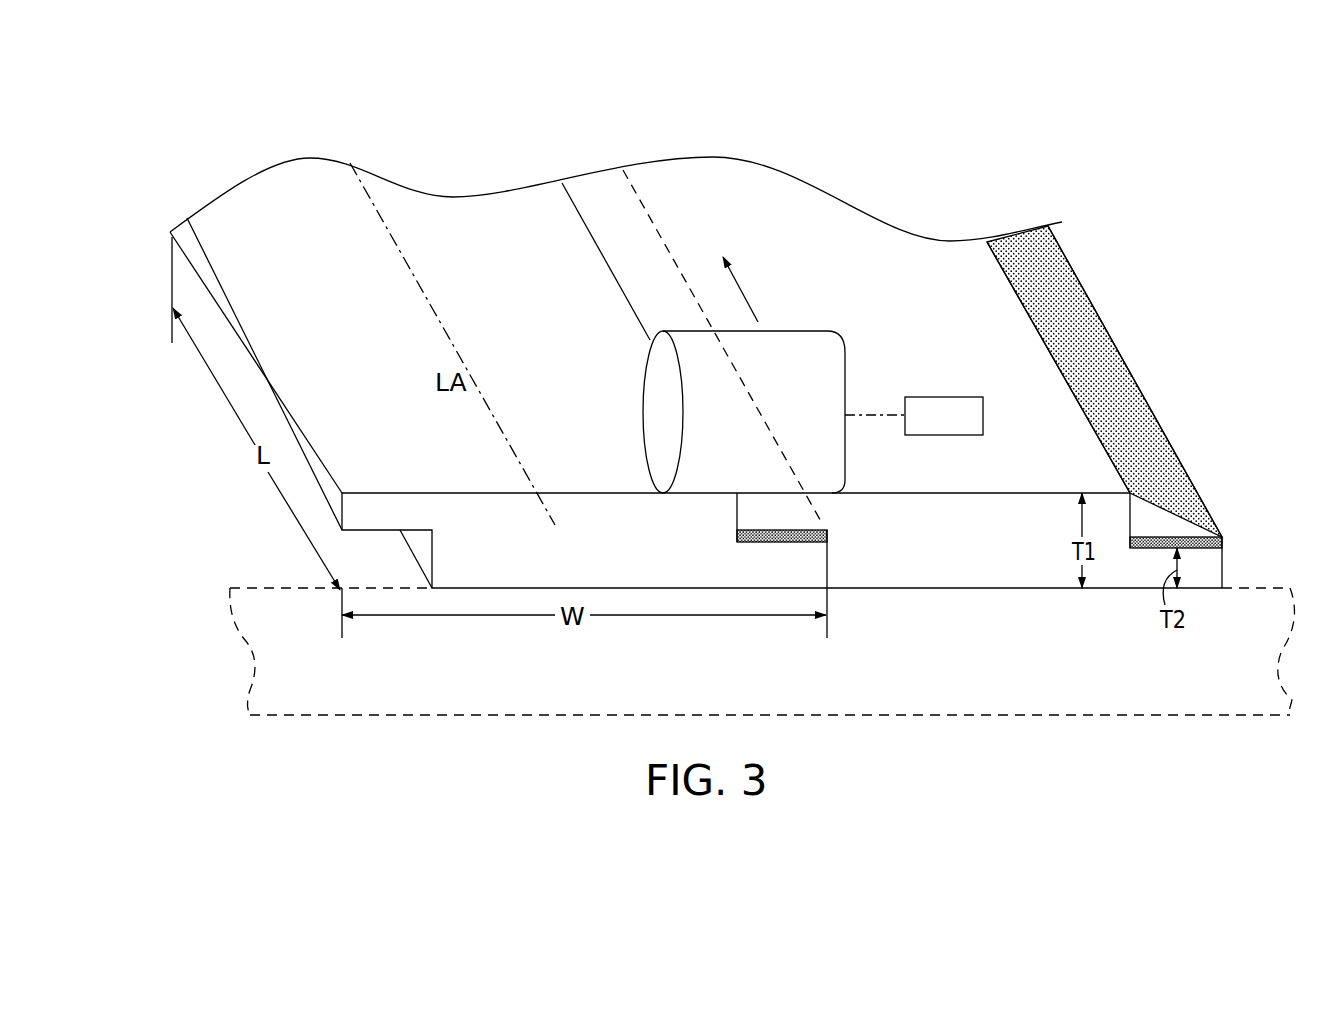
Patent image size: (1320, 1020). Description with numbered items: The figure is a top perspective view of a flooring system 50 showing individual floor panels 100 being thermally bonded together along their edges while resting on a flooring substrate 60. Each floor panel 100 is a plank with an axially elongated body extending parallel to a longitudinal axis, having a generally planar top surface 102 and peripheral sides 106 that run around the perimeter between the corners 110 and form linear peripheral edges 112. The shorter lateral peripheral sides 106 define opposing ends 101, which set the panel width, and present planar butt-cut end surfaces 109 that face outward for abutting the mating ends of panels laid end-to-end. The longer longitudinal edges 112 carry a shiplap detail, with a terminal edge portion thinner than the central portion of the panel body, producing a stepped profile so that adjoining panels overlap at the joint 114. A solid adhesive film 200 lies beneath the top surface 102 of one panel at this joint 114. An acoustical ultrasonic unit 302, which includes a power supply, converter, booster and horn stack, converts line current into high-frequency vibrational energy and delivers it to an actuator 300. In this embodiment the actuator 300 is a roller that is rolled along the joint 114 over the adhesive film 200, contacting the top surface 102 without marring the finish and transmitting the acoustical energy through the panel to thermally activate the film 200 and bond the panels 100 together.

The flooring system 50 is at (183, 190).
The flooring substrate 60 is at (1100, 690).
The floor panel 100 is at (316, 270).
The end 101 is at (840, 192).
The top surface 102 is at (437, 240).
The peripheral side 106 is at (197, 397).
The end surface 109 is at (908, 558).
The corner 110 is at (1222, 513).
The peripheral edge 112 is at (227, 357).
The joint 114 is at (610, 300).
The solid adhesive film 200 is at (1078, 323).
The actuator 300 is at (847, 350).
The acoustical ultrasonic unit 302 is at (935, 397).